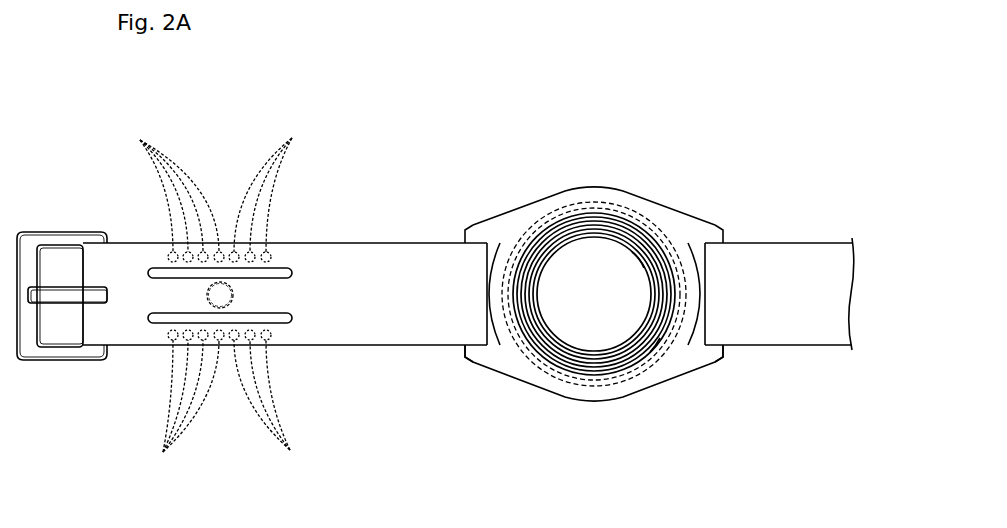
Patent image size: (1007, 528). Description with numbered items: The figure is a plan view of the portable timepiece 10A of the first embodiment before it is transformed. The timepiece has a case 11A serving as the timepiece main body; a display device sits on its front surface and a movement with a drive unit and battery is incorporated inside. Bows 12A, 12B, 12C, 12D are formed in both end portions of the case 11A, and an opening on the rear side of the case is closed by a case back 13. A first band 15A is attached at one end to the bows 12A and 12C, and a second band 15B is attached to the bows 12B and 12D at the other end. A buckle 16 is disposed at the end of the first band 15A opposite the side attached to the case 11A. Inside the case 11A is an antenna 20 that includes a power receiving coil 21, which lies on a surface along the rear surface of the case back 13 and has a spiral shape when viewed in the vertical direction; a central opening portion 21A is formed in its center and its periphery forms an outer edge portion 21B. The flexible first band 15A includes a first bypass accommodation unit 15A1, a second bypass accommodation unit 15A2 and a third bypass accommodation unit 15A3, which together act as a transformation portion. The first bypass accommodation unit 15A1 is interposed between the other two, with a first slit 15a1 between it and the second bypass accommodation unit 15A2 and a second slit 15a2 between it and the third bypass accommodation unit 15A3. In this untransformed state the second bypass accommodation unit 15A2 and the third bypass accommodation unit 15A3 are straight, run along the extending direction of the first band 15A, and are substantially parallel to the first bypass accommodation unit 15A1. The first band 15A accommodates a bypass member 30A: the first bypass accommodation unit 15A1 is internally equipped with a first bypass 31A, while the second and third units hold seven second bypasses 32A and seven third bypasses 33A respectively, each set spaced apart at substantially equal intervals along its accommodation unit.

The portable timepiece 10A is at (613, 275).
The case 11A is at (572, 190).
The bow 12A is at (477, 360).
The bow 12B is at (708, 357).
The bow 12C is at (474, 230).
The bow 12D is at (710, 230).
The case back 13 is at (660, 357).
The first band 15A is at (410, 258).
The second band 15B is at (800, 258).
The first bypass accommodation unit 15A1 is at (247, 297).
The second bypass accommodation unit 15A2 is at (225, 247).
The third bypass accommodation unit 15A3 is at (228, 345).
The first slit 15a1 is at (163, 277).
The second slit 15a2 is at (280, 321).
The buckle 16 is at (60, 360).
The antenna 20 is at (611, 286).
The power receiving coil 21 is at (603, 363).
The central opening portion 21A is at (599, 259).
The outer edge portion 21B is at (650, 232).
The bypass member 30A is at (230, 236).
The first bypass 31A is at (207, 297).
The second bypasses 32A is at (217, 183).
The third bypasses 33A is at (227, 411).